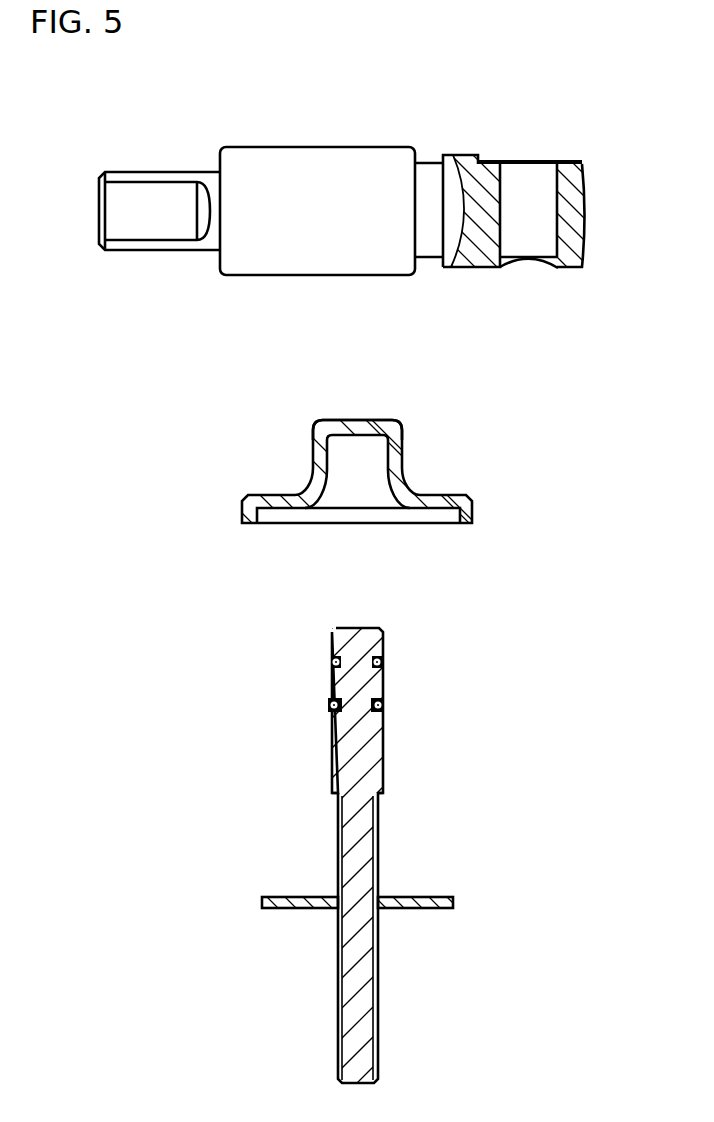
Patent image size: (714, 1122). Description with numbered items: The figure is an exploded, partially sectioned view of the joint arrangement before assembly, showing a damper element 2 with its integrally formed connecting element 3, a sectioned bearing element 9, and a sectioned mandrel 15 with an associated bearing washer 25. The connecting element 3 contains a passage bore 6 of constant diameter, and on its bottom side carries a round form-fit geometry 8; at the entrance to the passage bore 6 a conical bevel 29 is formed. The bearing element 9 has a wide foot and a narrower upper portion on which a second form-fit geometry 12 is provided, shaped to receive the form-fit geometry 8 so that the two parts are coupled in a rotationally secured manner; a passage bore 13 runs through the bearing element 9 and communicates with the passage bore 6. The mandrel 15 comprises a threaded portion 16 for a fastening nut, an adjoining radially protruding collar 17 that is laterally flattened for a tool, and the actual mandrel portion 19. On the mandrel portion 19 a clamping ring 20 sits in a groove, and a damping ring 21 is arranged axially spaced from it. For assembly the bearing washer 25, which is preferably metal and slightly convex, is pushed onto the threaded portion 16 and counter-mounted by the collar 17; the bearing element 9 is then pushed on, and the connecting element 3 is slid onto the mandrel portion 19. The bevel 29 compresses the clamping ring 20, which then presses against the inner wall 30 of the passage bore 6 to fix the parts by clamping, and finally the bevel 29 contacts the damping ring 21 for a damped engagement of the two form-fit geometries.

The damper element 2 is at (297, 133).
The connecting element 3 is at (465, 143).
The passage bore 6 is at (536, 170).
The form-fit geometry 8 is at (496, 276).
The bearing element 9 is at (362, 517).
The second form-fit geometry 12 is at (311, 411).
The passage bore 13 is at (356, 443).
The mandrel 15 is at (405, 848).
The threaded portion 16 is at (379, 975).
The collar 17 is at (385, 790).
The mandrel portion 19 is at (405, 671).
The clamping ring 20 is at (384, 660).
The damping ring 21 is at (385, 704).
The bearing washer 25 is at (458, 887).
The bevel 29 is at (556, 262).
The inner wall 30 is at (517, 166).